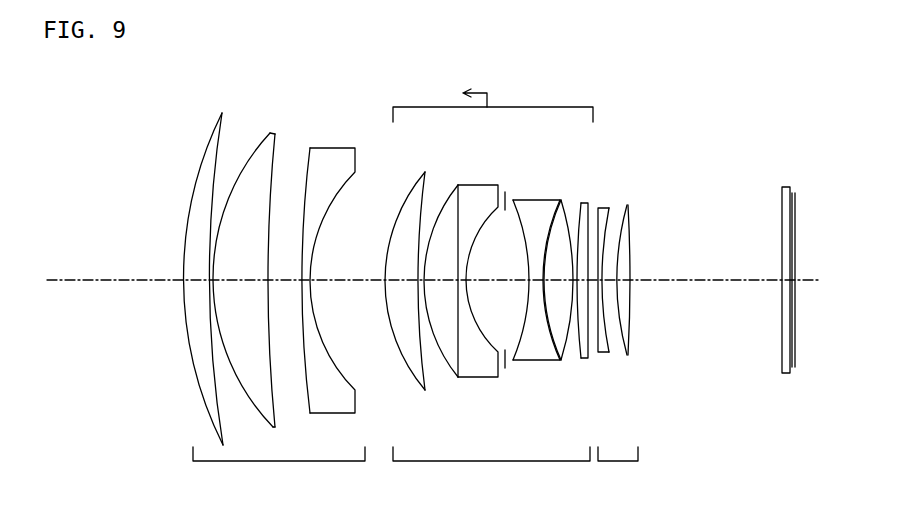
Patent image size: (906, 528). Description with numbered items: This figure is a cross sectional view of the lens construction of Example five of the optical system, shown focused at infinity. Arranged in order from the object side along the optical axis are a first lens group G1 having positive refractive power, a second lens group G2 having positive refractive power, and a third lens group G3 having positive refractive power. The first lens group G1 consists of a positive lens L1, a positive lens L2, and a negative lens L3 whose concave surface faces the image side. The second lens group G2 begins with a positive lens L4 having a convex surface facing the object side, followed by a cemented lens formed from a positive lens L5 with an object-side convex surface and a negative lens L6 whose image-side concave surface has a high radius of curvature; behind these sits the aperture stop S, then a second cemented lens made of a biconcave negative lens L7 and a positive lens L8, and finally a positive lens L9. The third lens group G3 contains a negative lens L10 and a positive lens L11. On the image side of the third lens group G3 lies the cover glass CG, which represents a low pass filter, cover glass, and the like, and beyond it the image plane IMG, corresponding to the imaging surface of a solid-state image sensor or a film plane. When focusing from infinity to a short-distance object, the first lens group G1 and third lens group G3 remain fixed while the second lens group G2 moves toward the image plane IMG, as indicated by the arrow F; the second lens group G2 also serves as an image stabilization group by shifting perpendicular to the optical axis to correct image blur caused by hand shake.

The lens L1 is at (223, 112).
The lens L2 is at (270, 132).
The lens L3 is at (333, 147).
The lens L4 is at (418, 173).
The lens L5 is at (452, 184).
The lens L6 is at (478, 184).
The biconcave lens L7 is at (526, 199).
The lens L8 is at (563, 199).
The lens L9 is at (585, 202).
The lens L10 is at (605, 207).
The lens L11 is at (627, 205).
The aperture stop S is at (505, 191).
The focusing group movement direction F is at (493, 95).
The first lens group G1 is at (279, 468).
The second lens group G2 is at (491, 468).
The third lens group G3 is at (618, 468).
The cover glass CG is at (783, 410).
The image plane IMG is at (793, 147).